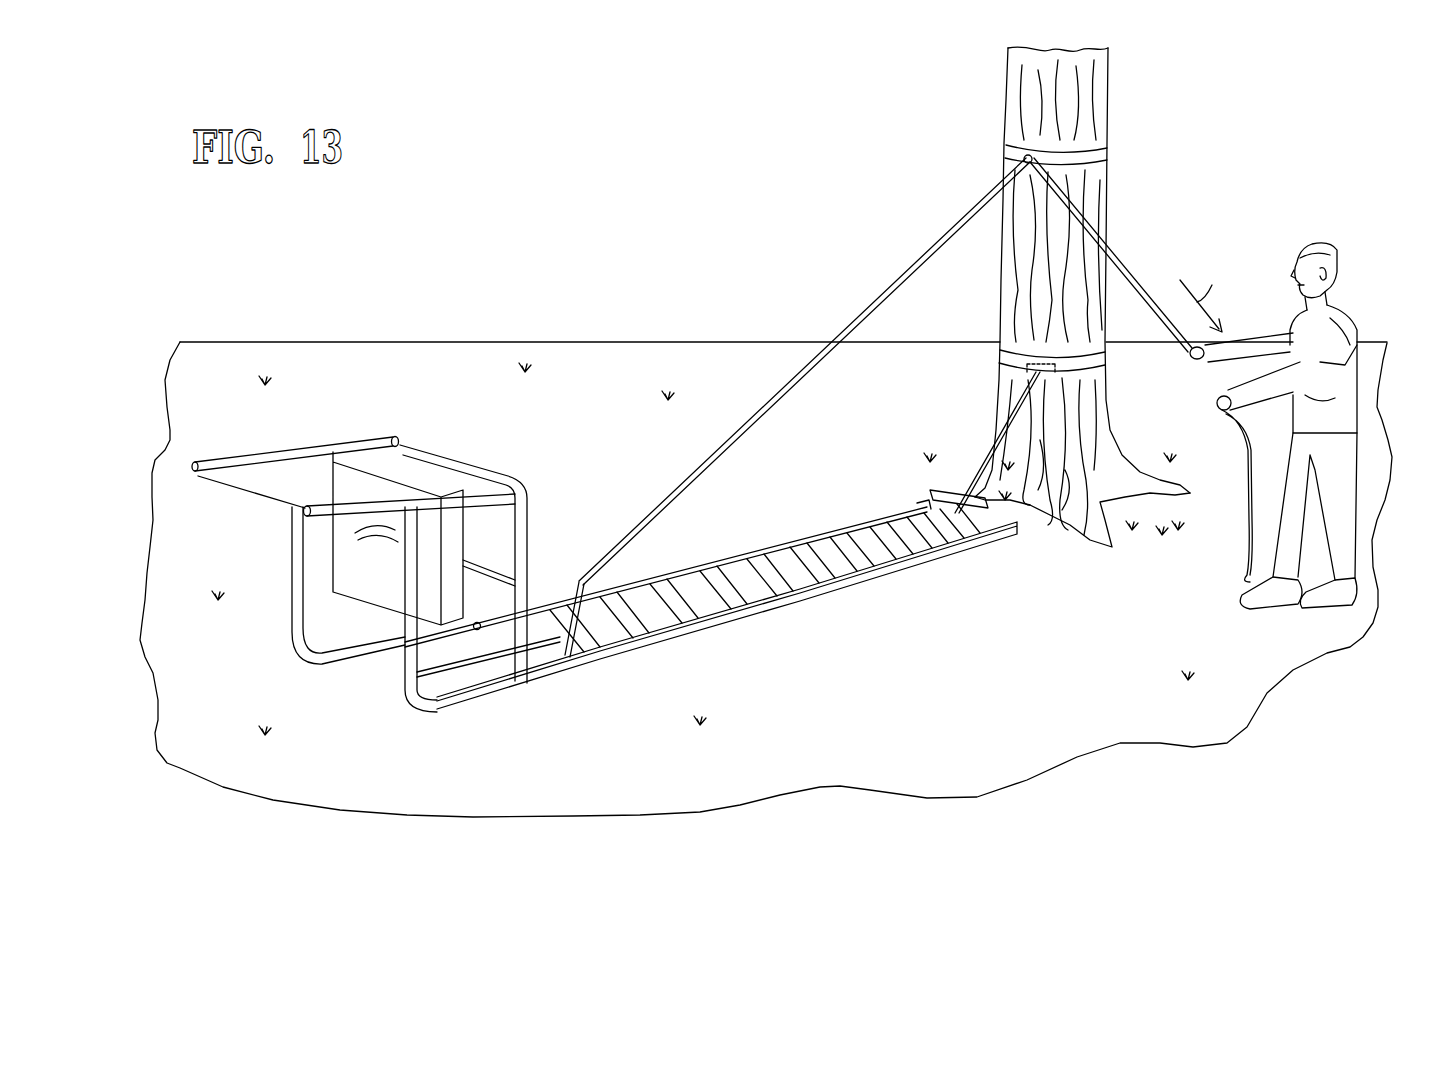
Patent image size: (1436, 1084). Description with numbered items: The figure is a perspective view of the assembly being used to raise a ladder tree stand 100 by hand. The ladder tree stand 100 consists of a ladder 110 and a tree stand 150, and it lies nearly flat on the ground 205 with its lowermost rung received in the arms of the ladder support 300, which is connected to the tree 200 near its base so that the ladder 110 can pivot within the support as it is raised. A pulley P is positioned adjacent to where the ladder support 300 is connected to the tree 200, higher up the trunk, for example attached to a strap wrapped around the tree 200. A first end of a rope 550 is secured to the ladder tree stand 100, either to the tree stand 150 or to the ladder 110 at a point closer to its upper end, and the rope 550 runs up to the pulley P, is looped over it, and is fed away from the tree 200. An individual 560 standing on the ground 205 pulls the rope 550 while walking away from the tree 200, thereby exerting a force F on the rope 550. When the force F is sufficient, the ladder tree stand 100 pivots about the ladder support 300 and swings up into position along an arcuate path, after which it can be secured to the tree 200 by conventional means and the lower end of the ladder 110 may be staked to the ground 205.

The ladder tree stand 100 is at (711, 604).
The ladder 110 is at (806, 592).
The tree stand 150 is at (369, 447).
The tree 200 is at (1083, 100).
The ground 205 is at (967, 681).
The ladder support 300 is at (995, 445).
The rope 550 is at (1122, 262).
The individual 560 is at (1357, 322).
The pulley P is at (1020, 153).
The force F is at (1213, 284).